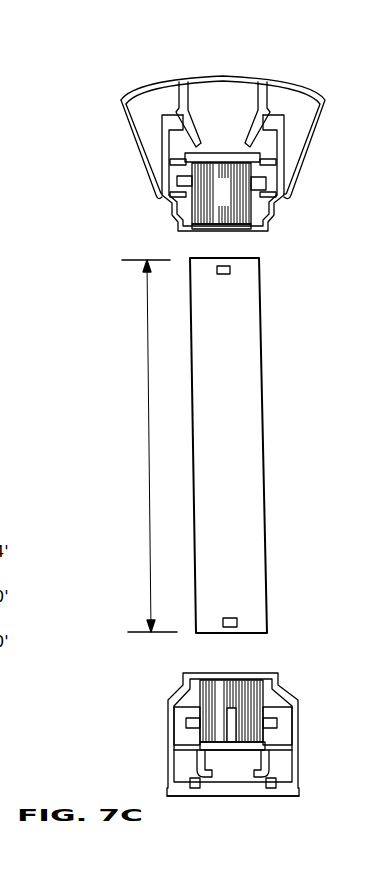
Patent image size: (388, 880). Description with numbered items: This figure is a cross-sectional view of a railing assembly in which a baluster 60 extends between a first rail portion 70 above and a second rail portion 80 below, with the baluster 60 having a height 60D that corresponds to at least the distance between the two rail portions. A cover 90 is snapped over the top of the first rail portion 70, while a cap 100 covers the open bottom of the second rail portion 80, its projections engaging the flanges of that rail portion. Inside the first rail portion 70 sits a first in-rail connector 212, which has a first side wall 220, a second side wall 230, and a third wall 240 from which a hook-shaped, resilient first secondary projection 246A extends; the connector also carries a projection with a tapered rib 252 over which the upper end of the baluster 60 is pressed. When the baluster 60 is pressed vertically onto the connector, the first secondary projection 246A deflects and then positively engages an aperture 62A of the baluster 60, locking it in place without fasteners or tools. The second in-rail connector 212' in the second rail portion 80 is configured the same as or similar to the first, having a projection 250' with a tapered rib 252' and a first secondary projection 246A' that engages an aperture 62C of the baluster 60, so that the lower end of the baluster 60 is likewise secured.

The cover 90 is at (122, 97).
The first in-rail connector 212 is at (270, 98).
The first rail portion 70 is at (275, 238).
The third wall 240 is at (229, 160).
The first secondary projection 246A is at (282, 199).
The second side wall 230 is at (266, 190).
The first side wall 220 is at (188, 182).
The rib 252 is at (169, 236).
The baluster 60 is at (258, 443).
The aperture 62A is at (226, 274).
The aperture 62C is at (237, 618).
The height 60D is at (148, 422).
The second rail portion 80 is at (160, 699).
The cap 100 is at (298, 791).
The projection 250' is at (276, 704).
The rib 252' is at (258, 695).
The first secondary projection 246A' is at (301, 722).
The second in-rail connector 212' is at (261, 795).